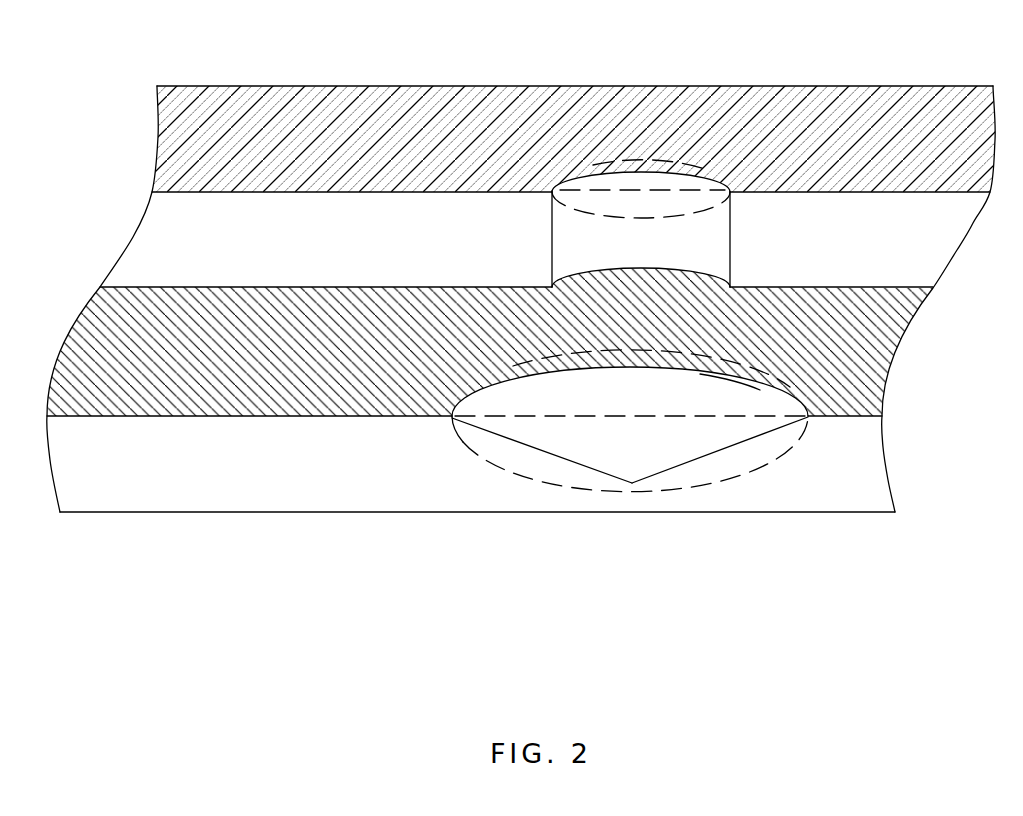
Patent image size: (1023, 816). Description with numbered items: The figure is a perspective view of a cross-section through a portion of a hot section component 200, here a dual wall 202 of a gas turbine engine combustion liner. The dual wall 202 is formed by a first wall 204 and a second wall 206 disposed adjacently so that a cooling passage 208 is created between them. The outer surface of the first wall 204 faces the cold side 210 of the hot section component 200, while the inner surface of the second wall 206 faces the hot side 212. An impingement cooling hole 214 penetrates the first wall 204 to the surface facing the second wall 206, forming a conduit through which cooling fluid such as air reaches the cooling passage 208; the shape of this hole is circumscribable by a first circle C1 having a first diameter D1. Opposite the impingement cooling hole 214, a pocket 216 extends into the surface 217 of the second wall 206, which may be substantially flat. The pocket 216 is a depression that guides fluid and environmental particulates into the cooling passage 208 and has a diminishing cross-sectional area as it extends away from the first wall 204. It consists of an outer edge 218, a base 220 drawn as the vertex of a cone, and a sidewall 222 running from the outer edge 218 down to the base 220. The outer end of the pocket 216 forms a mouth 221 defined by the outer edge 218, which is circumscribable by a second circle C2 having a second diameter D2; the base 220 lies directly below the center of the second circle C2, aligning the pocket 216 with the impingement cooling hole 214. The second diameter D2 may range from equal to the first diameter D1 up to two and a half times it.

The hot section component 200 is at (793, 63).
The dual wall 202 is at (263, 220).
The first wall 204 is at (312, 98).
The second wall 206 is at (370, 506).
The cooling passage 208 is at (241, 355).
The cold side 210 is at (497, 49).
The hot side 212 is at (513, 580).
The impingement cooling hole 214 is at (552, 222).
The pocket 216 is at (725, 438).
The surface of the second wall 217 is at (371, 388).
The outer edge 218 is at (588, 367).
The base 220 is at (632, 484).
The mouth 221 is at (723, 377).
The sidewall 222 is at (465, 447).
The first circle C1 is at (585, 172).
The first diameter D1 is at (682, 190).
The second circle C2 is at (500, 377).
The second diameter D2 is at (654, 416).